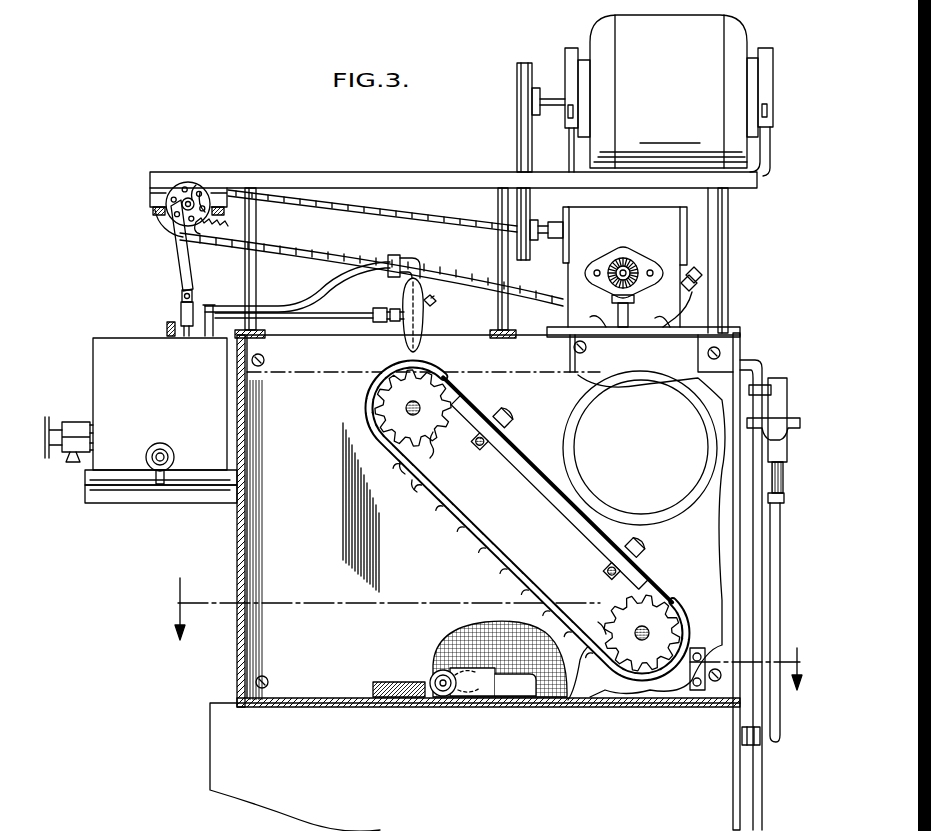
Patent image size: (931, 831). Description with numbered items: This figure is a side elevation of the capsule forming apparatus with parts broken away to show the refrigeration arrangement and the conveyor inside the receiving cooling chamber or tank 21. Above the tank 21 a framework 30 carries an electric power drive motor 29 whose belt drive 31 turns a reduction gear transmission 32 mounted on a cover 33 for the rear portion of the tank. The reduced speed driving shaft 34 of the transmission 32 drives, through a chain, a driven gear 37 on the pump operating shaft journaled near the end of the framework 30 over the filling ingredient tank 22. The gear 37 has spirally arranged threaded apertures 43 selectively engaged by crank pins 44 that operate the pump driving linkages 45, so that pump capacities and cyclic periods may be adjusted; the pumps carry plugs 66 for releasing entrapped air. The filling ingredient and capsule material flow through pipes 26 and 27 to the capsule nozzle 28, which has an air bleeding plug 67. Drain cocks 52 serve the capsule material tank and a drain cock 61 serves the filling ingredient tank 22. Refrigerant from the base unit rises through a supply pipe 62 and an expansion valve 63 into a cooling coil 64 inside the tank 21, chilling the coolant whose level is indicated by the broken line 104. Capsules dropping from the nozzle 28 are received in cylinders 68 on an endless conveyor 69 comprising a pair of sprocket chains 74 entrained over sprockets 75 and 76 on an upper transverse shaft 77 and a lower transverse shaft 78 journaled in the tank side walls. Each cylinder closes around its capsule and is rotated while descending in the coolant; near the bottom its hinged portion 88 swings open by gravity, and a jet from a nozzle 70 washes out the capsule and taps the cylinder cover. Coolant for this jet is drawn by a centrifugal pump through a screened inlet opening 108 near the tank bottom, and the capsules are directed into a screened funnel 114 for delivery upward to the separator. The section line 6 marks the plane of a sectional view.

The section line 6- 6 is at (488, 618).
The receiving cooling chamber or tank 21 is at (237, 638).
The filling ingredient tank 22 is at (96, 360).
The pipe 26 is at (300, 312).
The pipe 27 is at (322, 314).
The capsule nozzle 28 is at (423, 322).
The electric power drive motor 29 is at (735, 40).
The framework 30 is at (378, 172).
The belt drive 31 is at (518, 152).
The reduction gear transmission 32 is at (588, 218).
The cover 33 is at (665, 327).
The reduced speed driving shaft 34 is at (625, 262).
The driven gear 37 is at (218, 229).
The threaded apertures 43 is at (195, 186).
The crank pins 44 is at (182, 205).
The pump driving linkages 45 is at (180, 270).
The drain cocks 52 is at (75, 425).
The drain cock 61 is at (166, 446).
The supply pipe 62 is at (775, 740).
The expansion valve 63 is at (788, 392).
The cooling coil 64 is at (660, 512).
The plugs 66 is at (167, 327).
The air bleeding plug 67 is at (436, 302).
The cylinders 68 is at (523, 525).
The endless conveyor 69 is at (553, 488).
The nozzle 70 is at (570, 705).
The sprocket chains 74 is at (426, 490).
The sprockets 75 is at (445, 452).
The sprockets 76 is at (610, 622).
The upper transverse shaft 77 is at (413, 408).
The lower transverse shaft 78 is at (642, 633).
The hinged portion 88 is at (588, 702).
The coolant fluid level 104 is at (312, 368).
The screened inlet opening 108 is at (378, 682).
The screened funnel 114 is at (450, 642).